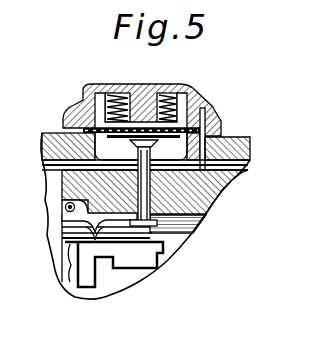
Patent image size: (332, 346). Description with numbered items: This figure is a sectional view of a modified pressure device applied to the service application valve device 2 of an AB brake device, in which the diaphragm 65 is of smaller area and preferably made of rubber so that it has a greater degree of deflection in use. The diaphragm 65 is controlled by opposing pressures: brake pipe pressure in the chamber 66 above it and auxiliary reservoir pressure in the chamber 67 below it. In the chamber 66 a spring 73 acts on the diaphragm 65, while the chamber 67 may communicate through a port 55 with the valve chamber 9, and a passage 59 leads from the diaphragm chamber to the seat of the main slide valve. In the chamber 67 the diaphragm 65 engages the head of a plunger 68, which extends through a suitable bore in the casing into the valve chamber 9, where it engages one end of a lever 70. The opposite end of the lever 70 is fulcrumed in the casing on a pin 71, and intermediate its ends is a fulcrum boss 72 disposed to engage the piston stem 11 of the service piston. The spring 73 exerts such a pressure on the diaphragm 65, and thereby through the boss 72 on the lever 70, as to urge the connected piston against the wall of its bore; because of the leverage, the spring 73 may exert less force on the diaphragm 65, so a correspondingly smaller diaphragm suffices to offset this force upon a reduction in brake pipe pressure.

The service application valve device 2 is at (225, 127).
The valve chamber 9 is at (175, 250).
The piston stem 11 is at (73, 281).
The port 55 is at (188, 232).
The passage 59 is at (203, 117).
The diaphragm 65 is at (187, 96).
The chamber 66 is at (104, 98).
The chamber 67 is at (167, 150).
The plunger 68 is at (48, 147).
The lever 70 is at (64, 228).
The pin 71 is at (64, 207).
The fulcrum boss 72 is at (94, 240).
The spring 73 is at (114, 98).